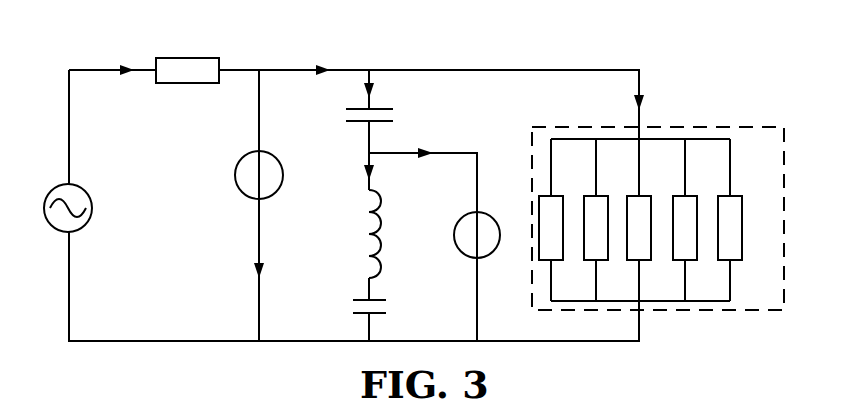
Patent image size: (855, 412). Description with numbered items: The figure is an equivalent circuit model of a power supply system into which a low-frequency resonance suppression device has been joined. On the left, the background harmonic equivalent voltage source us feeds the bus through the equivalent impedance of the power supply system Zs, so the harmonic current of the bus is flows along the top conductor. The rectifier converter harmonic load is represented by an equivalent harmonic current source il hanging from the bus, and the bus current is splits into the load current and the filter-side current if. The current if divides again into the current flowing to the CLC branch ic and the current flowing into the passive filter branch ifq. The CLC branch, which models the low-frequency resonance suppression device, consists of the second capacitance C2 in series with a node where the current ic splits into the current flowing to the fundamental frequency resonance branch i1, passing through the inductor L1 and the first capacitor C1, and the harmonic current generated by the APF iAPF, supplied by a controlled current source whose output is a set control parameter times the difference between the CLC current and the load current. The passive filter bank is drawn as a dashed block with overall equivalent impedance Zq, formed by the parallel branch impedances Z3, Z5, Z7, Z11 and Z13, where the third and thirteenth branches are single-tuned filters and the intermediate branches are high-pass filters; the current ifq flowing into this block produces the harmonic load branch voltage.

The equivalent impedance of the power supply system Zs is at (187, 88).
The background harmonic equivalent voltage source us is at (77, 219).
The harmonic current of the bus is is at (94, 53).
The filter-side current if is at (267, 53).
The equivalent harmonic current source of harmonic load il is at (259, 190).
The current flowing to the CLC branch ic is at (382, 87).
The second capacitance C2 is at (388, 126).
The current flowing to the fundamental frequency resonance branch i1 is at (356, 173).
The harmonic current generated by the APF iAPF is at (451, 211).
The inductor of the fundamental frequency resonance branch L1 is at (394, 234).
The first capacitor of the fundamental frequency resonance branch C1 is at (388, 311).
The current flowing into the passive filter branch ifq is at (657, 94).
The overall equivalent impedance of the passive filter branch Zq is at (731, 130).
The impedance of passive filter Branch 3 Z3 is at (560, 220).
The impedance of passive filter Branch 5 Z5 is at (605, 220).
The impedance of passive filter Branch 7 Z7 is at (651, 220).
The impedance of passive filter Branch 11 Z11 is at (699, 220).
The impedance of passive filter Branch 13 Z13 is at (748, 220).